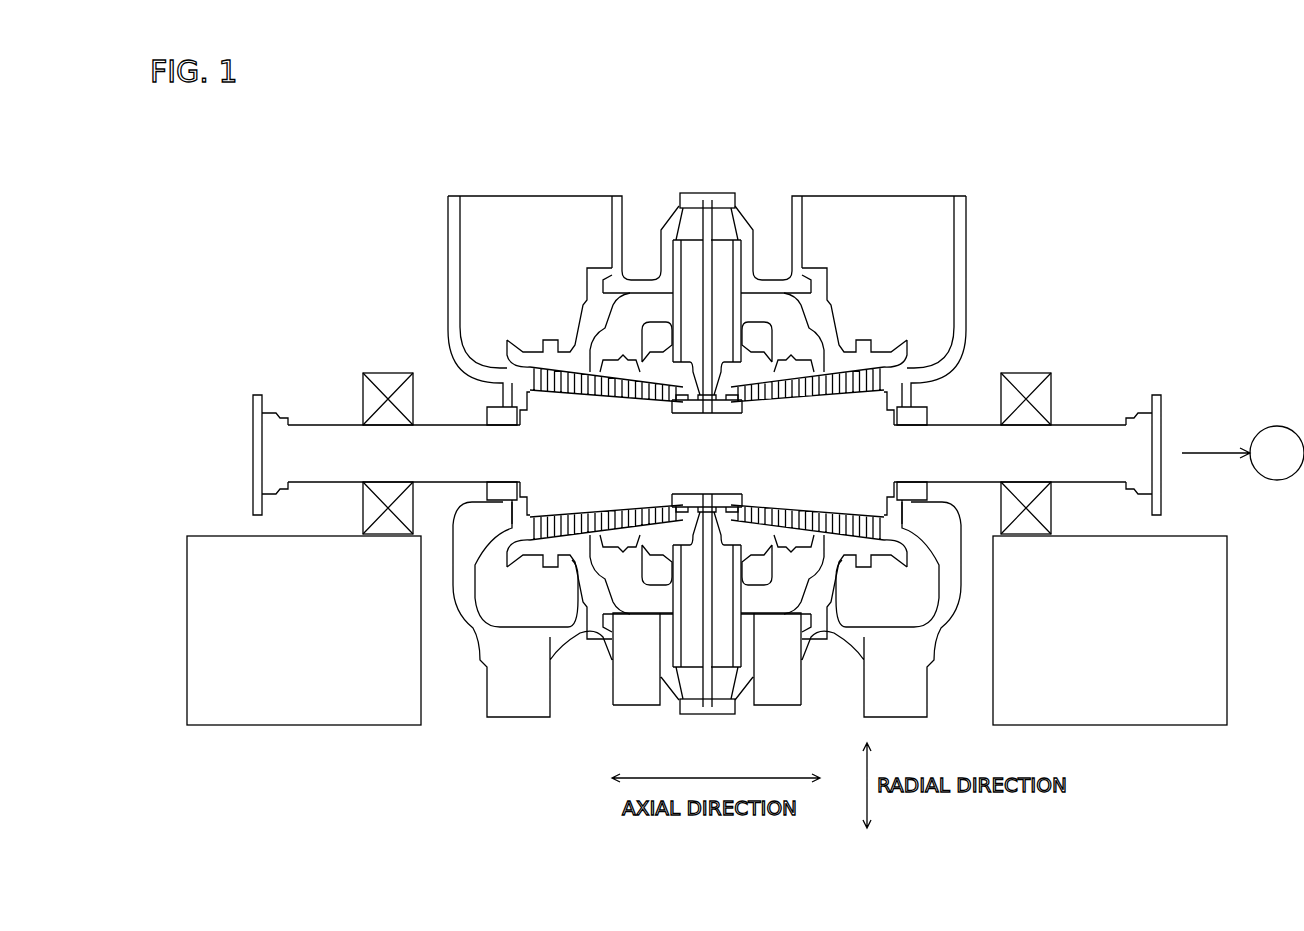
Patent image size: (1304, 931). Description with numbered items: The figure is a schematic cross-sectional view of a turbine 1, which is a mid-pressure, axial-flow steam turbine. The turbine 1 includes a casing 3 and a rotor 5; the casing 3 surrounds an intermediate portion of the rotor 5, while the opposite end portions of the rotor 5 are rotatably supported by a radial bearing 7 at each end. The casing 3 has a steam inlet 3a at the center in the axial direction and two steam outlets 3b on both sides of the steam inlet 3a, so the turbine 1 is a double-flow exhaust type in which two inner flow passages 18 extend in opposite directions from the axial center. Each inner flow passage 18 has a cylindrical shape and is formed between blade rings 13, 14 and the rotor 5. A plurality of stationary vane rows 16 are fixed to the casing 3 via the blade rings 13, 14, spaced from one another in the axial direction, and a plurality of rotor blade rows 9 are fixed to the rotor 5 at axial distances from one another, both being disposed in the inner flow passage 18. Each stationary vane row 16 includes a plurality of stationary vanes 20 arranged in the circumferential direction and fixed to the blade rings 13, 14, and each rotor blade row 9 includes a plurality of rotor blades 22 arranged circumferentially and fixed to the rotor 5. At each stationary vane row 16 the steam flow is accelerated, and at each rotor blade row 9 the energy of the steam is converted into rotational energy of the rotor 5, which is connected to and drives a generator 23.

The turbine 1 is at (1088, 176).
The casing 3 is at (968, 262).
The steam inlet 3a is at (717, 193).
The steam outlet 3b is at (540, 196).
The rotor 5 is at (1082, 425).
The radial bearing 7 is at (398, 372).
The rotor blade row 9 is at (775, 400).
The blade ring 13 is at (640, 367).
The blade ring 14 is at (572, 352).
The stationary vane row 16 is at (668, 397).
The inner flow passage 18 is at (602, 396).
The stationary vane 20 is at (668, 510).
The rotor blade 22 is at (775, 507).
The generator 23 is at (1277, 426).